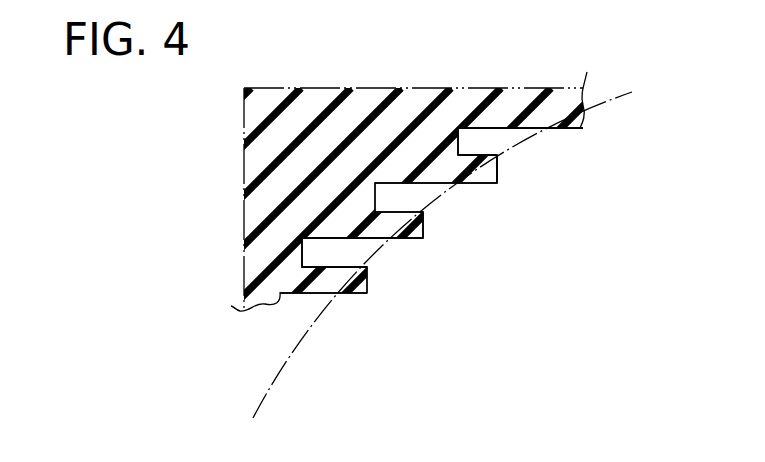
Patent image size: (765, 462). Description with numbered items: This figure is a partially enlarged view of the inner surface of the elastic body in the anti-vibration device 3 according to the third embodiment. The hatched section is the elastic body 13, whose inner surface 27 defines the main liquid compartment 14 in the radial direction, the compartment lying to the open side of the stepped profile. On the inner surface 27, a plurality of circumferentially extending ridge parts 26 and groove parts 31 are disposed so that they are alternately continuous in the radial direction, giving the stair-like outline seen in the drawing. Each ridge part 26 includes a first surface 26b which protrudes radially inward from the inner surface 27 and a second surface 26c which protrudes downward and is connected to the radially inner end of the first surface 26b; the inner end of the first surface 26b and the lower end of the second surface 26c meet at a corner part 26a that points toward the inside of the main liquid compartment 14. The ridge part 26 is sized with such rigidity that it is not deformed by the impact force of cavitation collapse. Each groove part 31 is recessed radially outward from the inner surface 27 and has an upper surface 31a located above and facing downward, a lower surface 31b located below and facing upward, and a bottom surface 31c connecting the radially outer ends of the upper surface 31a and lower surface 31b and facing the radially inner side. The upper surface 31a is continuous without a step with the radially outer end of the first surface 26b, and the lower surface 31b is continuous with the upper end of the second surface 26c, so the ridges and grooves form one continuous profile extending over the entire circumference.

The anti-vibration device 3 is at (575, 150).
The elastic body 13 is at (373, 98).
The main liquid compartment 14 is at (603, 337).
The ridge part 26 is at (487, 176).
The corner part 26a is at (422, 240).
The first surface 26b is at (407, 241).
The second surface 26c is at (498, 163).
The inner surface 27 is at (342, 296).
The groove part 31 is at (353, 253).
The upper surface 31a is at (505, 128).
The lower surface 31b is at (480, 155).
The bottom surface 31c is at (460, 143).